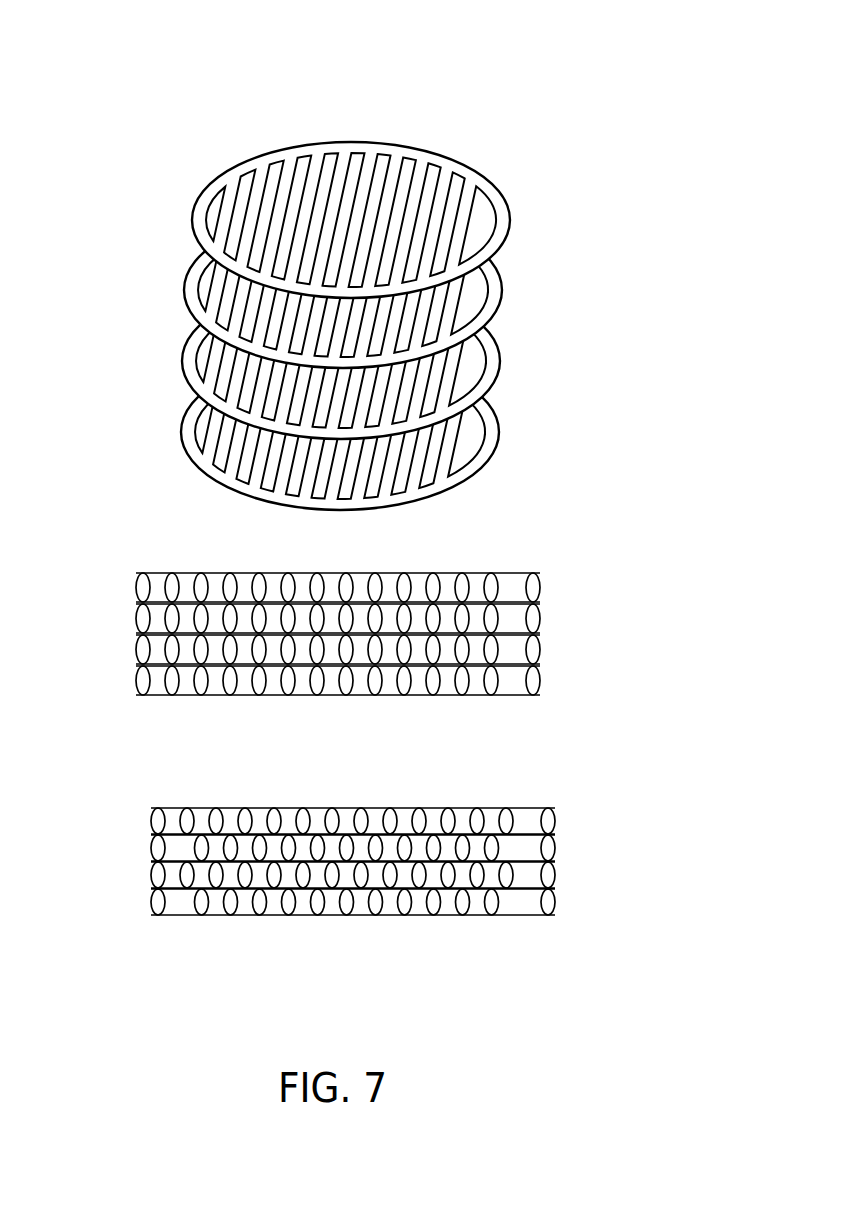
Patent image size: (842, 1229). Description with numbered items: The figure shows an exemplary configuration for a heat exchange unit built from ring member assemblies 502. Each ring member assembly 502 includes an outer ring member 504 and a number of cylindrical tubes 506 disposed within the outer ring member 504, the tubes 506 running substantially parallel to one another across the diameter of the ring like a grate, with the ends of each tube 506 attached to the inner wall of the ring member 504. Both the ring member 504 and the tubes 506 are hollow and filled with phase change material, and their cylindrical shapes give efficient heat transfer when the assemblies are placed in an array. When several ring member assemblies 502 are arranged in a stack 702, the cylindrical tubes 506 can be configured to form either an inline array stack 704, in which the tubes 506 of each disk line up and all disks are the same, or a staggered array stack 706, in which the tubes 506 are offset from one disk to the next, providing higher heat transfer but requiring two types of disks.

The ring member assembly 502 is at (438, 61).
The outer ring member 504 is at (423, 155).
The cylindrical tube 506 is at (352, 163).
The stack 702 is at (168, 162).
The inline array stack 704 is at (127, 569).
The staggered array stack 706 is at (127, 788).